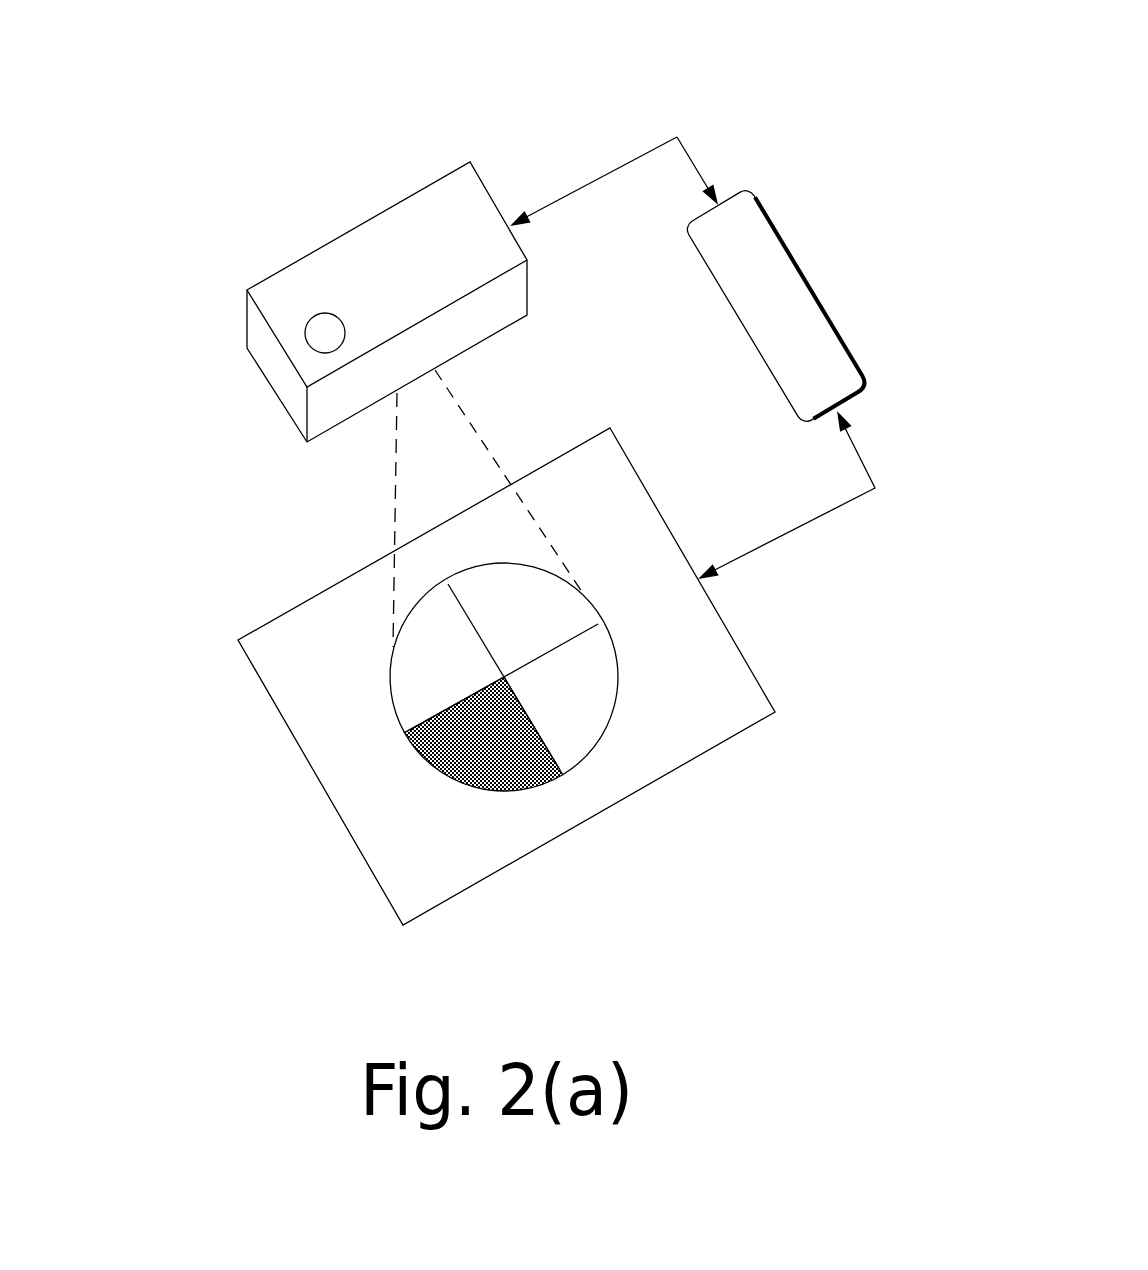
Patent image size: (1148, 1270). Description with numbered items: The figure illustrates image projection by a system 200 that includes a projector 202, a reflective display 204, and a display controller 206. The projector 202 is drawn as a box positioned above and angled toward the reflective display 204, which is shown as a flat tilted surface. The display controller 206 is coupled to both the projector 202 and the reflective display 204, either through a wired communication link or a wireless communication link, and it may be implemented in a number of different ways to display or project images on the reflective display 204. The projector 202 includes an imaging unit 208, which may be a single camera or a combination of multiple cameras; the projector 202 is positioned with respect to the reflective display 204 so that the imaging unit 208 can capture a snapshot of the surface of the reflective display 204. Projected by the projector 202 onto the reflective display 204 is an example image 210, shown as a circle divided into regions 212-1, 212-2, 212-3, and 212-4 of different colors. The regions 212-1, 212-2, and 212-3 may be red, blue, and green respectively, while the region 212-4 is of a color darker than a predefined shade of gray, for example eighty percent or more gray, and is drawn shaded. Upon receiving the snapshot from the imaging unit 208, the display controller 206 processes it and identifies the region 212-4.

The system 200 is at (641, 74).
The projector 202 is at (325, 293).
The reflective display 204 is at (752, 667).
The display controller 206 is at (776, 306).
The imaging unit 208 is at (323, 331).
The image 210 is at (501, 687).
The region 212-1 is at (583, 713).
The region 212-2 is at (527, 597).
The region 212-3 is at (433, 657).
The region 212-4 is at (470, 760).